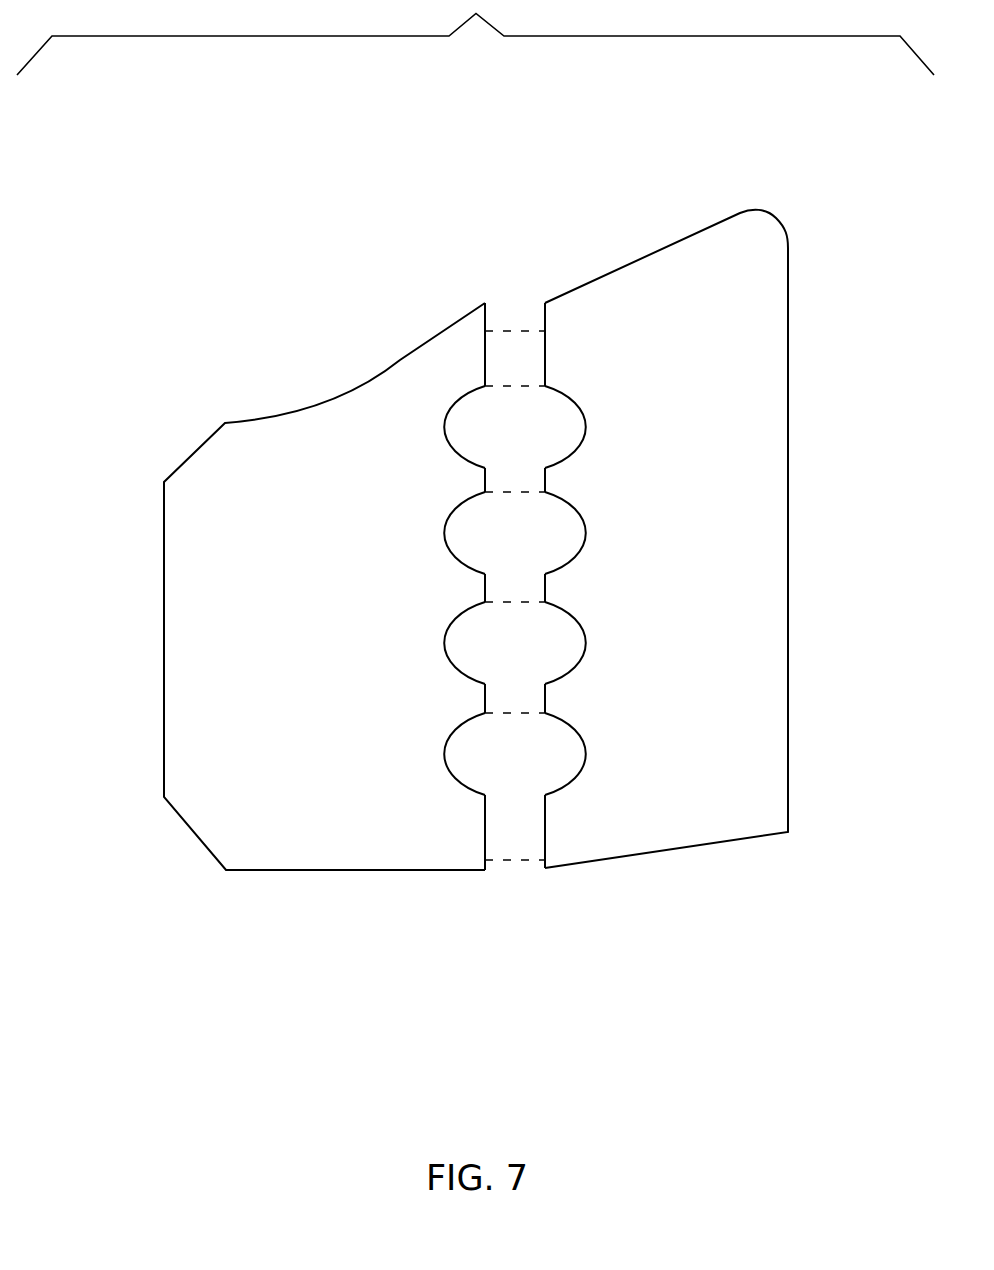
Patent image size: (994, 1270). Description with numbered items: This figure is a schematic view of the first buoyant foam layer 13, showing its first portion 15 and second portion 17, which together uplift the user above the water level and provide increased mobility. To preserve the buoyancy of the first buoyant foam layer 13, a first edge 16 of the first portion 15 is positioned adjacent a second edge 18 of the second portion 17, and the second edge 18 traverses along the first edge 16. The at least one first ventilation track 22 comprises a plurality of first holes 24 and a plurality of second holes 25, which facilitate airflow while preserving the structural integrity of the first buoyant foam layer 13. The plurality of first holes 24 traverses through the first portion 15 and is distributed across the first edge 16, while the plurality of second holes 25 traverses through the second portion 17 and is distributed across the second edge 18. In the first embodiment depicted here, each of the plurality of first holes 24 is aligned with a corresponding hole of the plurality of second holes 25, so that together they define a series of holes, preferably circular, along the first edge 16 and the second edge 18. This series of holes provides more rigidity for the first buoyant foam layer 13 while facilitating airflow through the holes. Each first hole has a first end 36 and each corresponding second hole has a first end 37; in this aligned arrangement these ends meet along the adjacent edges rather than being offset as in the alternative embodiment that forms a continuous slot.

The first buoyant foam layer 13 is at (180, 412).
The first portion 15 is at (618, 285).
The first edge 16 is at (541, 318).
The second portion 17 is at (322, 415).
The second edge 18 is at (480, 307).
The first ventilation track 22 is at (525, 862).
The plurality of first holes 24 is at (578, 391).
The plurality of second holes 25 is at (443, 428).
The first end 36 is at (547, 382).
The first end 37 is at (472, 385).